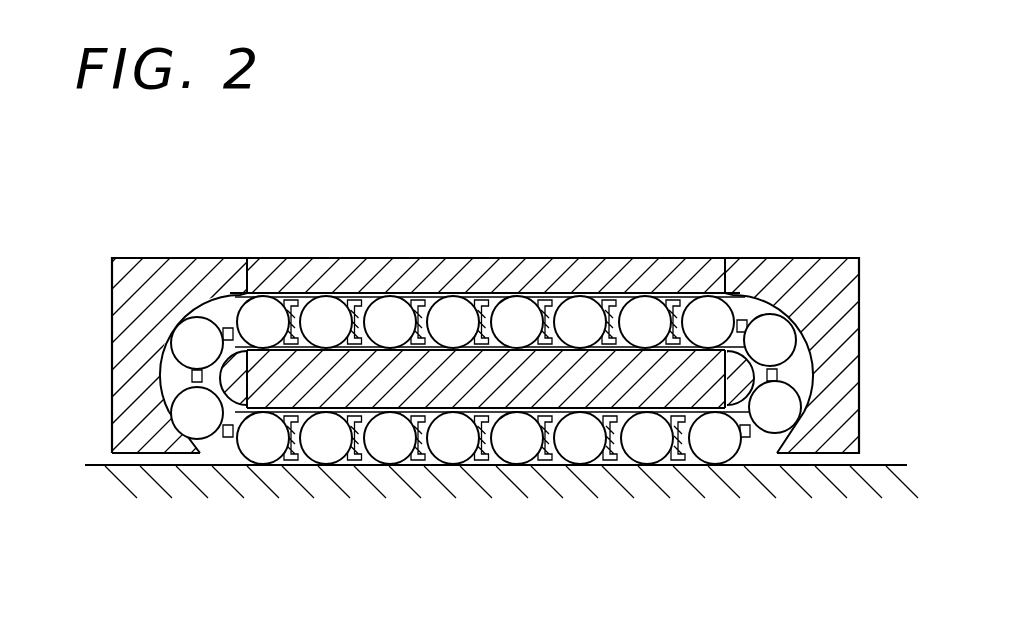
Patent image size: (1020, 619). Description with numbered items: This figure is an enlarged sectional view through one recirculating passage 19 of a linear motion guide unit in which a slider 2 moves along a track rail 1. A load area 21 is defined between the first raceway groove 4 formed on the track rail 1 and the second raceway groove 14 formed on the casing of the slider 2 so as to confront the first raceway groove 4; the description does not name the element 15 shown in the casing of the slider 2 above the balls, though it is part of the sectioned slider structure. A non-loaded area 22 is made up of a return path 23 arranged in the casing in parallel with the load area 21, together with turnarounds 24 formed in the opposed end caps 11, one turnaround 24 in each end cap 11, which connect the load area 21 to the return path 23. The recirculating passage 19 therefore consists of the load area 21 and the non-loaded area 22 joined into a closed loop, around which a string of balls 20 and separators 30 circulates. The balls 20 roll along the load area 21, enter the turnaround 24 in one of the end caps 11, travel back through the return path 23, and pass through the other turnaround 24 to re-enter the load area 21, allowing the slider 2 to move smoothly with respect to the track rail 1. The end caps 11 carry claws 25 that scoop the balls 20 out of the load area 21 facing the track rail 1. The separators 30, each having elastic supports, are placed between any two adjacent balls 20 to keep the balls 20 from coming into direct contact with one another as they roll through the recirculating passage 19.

The track rail 1 is at (855, 497).
The slider 2 is at (470, 246).
The first raceway groove 4 is at (875, 462).
The end caps 11 is at (182, 277).
The second raceway groove 14 is at (544, 415).
The top plate 15 is at (547, 272).
The recirculating passage 19 is at (745, 462).
The balls 20 is at (264, 310).
The load area 21 is at (490, 445).
The non-loaded area 22 is at (740, 310).
The return path 23 is at (357, 305).
The turnarounds 24 is at (797, 367).
The claws 25 is at (188, 447).
The separators 30 is at (421, 307).